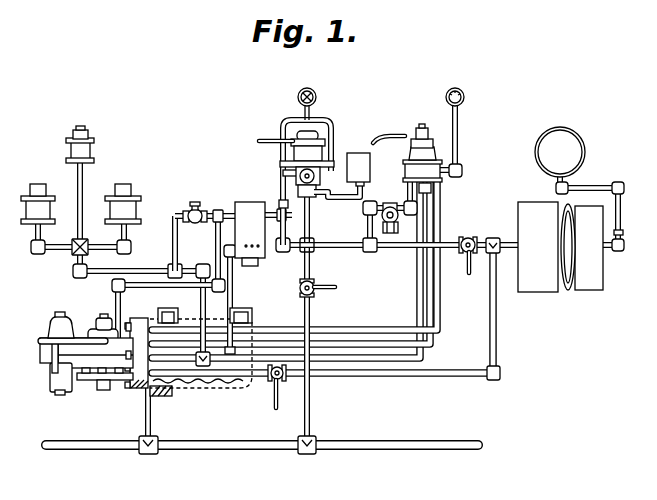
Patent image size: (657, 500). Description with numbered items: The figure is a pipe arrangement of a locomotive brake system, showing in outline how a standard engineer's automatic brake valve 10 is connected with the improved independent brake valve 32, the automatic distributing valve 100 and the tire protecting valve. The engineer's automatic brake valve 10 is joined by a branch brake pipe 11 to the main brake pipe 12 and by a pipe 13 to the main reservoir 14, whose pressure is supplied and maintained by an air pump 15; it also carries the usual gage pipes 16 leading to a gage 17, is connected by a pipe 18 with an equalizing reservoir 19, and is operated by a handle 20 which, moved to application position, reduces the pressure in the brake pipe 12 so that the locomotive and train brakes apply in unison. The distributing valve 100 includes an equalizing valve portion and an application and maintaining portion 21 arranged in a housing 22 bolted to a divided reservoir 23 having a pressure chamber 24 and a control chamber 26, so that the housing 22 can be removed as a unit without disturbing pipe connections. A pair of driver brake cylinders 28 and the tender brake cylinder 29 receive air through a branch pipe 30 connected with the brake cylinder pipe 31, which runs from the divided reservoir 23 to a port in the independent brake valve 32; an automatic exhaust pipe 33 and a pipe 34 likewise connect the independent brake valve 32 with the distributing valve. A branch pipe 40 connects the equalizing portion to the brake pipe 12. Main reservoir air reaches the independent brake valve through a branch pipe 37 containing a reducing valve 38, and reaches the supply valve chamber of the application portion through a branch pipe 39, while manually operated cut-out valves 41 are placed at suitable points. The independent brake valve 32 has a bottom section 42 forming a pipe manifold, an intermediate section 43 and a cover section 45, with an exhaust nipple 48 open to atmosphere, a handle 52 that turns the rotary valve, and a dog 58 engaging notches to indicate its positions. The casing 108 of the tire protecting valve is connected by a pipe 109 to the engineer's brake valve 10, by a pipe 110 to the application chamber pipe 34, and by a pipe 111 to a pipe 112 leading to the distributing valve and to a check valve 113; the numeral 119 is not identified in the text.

The engineer's automatic brake valve 10 is at (334, 114).
The branch brake pipe 11 is at (312, 305).
The main brake pipe 12 is at (272, 451).
The main reservoir line 13 is at (338, 249).
The main reservoir 14 is at (560, 247).
The air pump 15 is at (579, 189).
The gage pipes 16 is at (287, 120).
The gage 17 is at (313, 88).
The pipe 18 is at (342, 200).
The equalizing reservoir 19 is at (358, 169).
The handle 20 is at (258, 141).
The application and maintaining portion 21 is at (42, 323).
The housing 22 is at (85, 359).
The divided reservoir 23 is at (194, 393).
The pressure chamber 24 is at (207, 389).
The control chamber 26 is at (162, 391).
The driver brake cylinders 28 is at (81, 219).
The tender brake cylinder 29 is at (88, 148).
The branch pipe 30 is at (154, 269).
The brake cylinder pipe 31 is at (424, 270).
The independent brake valve 32 is at (430, 124).
The automatic exhaust pipe 33 is at (441, 215).
The application chamber pipe 34 is at (433, 304).
The branch pipe 37 is at (407, 186).
The reducing valve 38 is at (396, 218).
The branch pipe 39 is at (466, 377).
The branch pipe 40 is at (146, 418).
The cut-out valves 41 is at (337, 288).
The bottom section 42 is at (422, 171).
The intermediate section 43 is at (457, 165).
The cover section 45 is at (422, 153).
The exhaust nipple 48 is at (432, 187).
The handle 52 is at (392, 139).
The dog 58 is at (410, 148).
The automatic distributing valve 100 is at (33, 360).
The tire protecting valve casing 108 is at (250, 234).
The pipe 109 is at (271, 212).
The pipe 110 is at (232, 293).
The pipe 111 is at (216, 211).
The pipe 112 is at (156, 286).
The check valve 113 is at (198, 203).
The pipe 119 is at (177, 243).